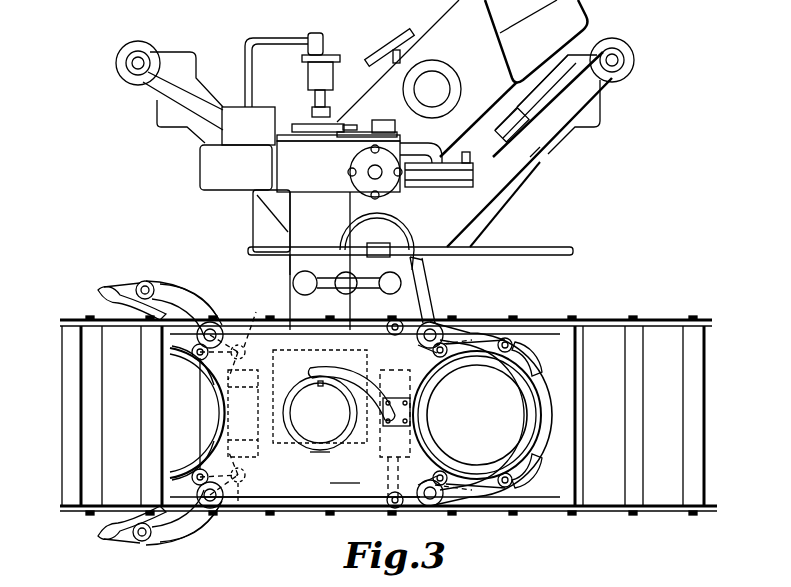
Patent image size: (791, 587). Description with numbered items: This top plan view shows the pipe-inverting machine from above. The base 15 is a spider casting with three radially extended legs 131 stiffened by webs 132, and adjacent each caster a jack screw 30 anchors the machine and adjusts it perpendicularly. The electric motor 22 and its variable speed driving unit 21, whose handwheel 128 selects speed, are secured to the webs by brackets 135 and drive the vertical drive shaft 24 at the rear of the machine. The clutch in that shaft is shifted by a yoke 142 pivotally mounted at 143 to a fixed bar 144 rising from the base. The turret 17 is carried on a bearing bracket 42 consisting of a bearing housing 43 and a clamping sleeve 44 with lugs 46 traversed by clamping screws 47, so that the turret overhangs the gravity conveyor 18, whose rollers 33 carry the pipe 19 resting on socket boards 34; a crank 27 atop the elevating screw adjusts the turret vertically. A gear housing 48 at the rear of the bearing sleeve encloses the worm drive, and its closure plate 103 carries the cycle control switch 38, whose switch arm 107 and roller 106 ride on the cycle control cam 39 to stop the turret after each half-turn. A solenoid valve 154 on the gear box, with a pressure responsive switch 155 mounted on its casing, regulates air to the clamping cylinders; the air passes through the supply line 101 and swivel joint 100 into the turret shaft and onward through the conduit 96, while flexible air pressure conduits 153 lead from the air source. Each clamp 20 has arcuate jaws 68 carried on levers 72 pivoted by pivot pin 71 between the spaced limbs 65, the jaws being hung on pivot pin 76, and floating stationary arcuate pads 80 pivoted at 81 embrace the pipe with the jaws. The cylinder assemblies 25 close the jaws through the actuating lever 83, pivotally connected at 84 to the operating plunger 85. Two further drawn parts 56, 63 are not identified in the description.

The base 15 is at (545, 156).
The turret 17 is at (318, 455).
The conveyor 18 is at (658, 318).
The pipe 19 is at (522, 400).
The clamps 20 is at (205, 300).
The variable speed driving unit 21 is at (432, 36).
The electric motor 22 is at (588, 14).
The vertical drive shaft 24 is at (370, 172).
The cylinder assemblies 25 is at (378, 448).
The crank 27 is at (306, 292).
The jack screw 30 is at (126, 66).
The rollers 33 is at (80, 418).
The socket boards 34 is at (566, 468).
The cycle control switch 38 is at (383, 120).
The cycle control cam 39 is at (300, 124).
The bearing bracket 42 is at (412, 236).
The bearing housing 43 is at (290, 266).
The clamping sleeve 44 is at (414, 262).
The lugs 46 is at (427, 295).
The clamping screws 47 is at (455, 250).
The gear housing 48 is at (338, 177).
The drum 56 is at (300, 442).
The frame plate 63 is at (300, 485).
The spaced limbs 65 is at (343, 485).
The jaws 68 is at (102, 293).
The pivot pin 71 is at (216, 324).
The levers 72 is at (173, 293).
The pivot pin 76 is at (147, 281).
The stationary arcuate pads 80 is at (188, 358).
The pivot 81 is at (196, 347).
The actuating lever 83 is at (240, 508).
The pivotal connection 84 is at (242, 345).
The operating plunger 85 is at (248, 470).
The conduit 96 is at (371, 387).
The swivel joint 100 is at (306, 75).
The air pressure supply line 101 is at (282, 37).
The closure plate 103 is at (297, 142).
The roller 106 is at (349, 124).
The switch arm 107 is at (362, 131).
The handwheel 128 is at (395, 45).
The legs 131 is at (177, 118).
The webs 132 is at (162, 102).
The brackets 135 is at (500, 110).
The yoke 142 is at (430, 152).
The pivot 143 is at (466, 152).
The fixed bar 144 is at (498, 214).
The flexible air pressure conduits 153 is at (252, 220).
The solenoid valve 154 is at (208, 170).
The pressure responsive switch 155 is at (237, 105).